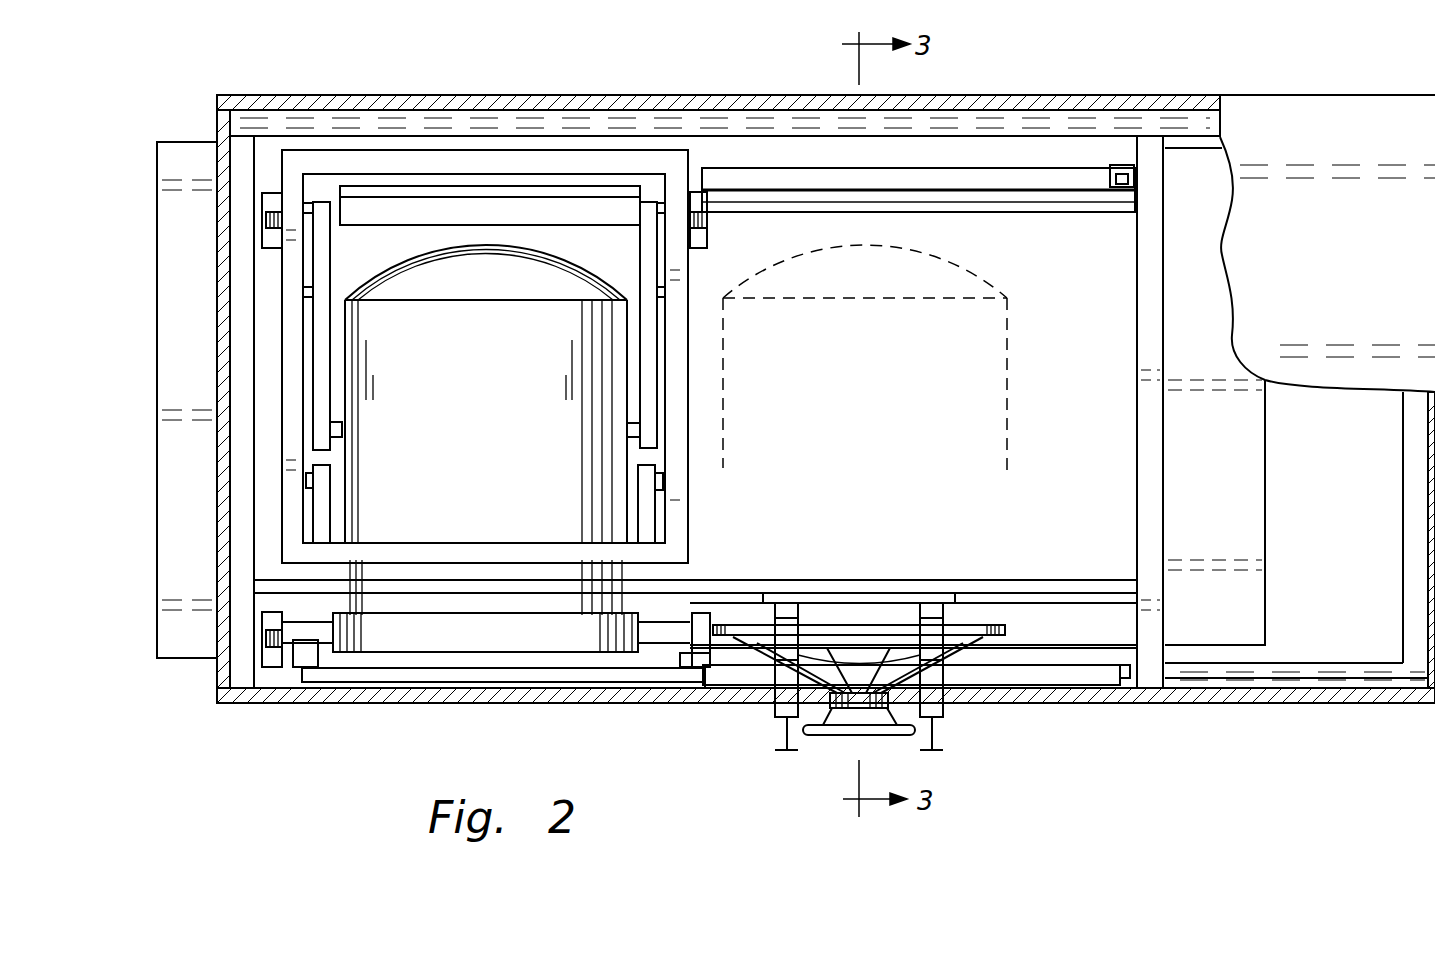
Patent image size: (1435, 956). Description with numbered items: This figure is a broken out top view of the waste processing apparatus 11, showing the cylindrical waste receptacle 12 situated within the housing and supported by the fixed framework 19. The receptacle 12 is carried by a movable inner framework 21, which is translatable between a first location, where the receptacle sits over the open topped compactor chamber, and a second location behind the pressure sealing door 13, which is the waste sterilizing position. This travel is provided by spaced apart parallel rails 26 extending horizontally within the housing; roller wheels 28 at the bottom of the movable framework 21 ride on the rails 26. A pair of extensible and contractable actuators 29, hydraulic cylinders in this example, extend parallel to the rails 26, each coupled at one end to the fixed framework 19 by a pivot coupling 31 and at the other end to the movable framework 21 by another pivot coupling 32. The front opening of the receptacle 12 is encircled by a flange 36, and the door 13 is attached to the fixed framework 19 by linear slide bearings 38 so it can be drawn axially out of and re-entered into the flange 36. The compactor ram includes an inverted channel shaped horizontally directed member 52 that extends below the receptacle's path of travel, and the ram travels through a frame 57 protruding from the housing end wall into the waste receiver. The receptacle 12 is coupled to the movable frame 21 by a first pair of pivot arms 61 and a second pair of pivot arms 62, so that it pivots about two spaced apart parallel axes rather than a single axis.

The furnace apparatus 11 is at (1235, 775).
The waste receptacle 12 is at (508, 423).
The pressure sealing door 13 is at (1007, 628).
The fixed framework 19 is at (1133, 513).
The movable inner framework 21 is at (690, 485).
The rails 26 is at (1082, 210).
The roller wheels 28 is at (270, 196).
The actuators 29 is at (945, 190).
The pivot coupling 31 is at (1124, 165).
The pivot coupling 32 is at (305, 680).
The flange 36 is at (440, 652).
The linear slide bearings 38 is at (760, 725).
The horizontally directed member 52 is at (1265, 514).
The frame 57 is at (197, 327).
The first pair of pivot arms 61 is at (640, 252).
The second pair of pivot arms 62 is at (657, 525).